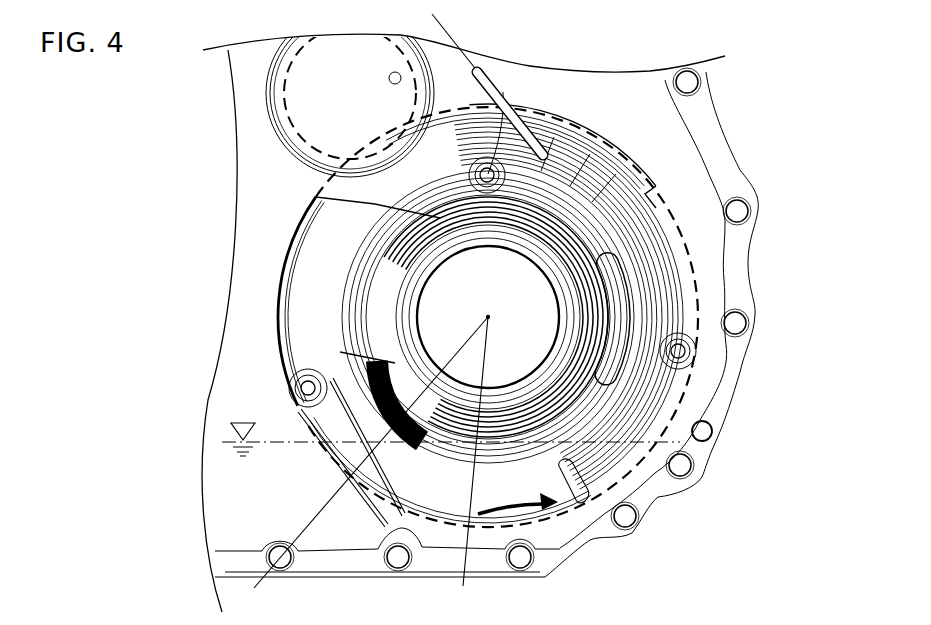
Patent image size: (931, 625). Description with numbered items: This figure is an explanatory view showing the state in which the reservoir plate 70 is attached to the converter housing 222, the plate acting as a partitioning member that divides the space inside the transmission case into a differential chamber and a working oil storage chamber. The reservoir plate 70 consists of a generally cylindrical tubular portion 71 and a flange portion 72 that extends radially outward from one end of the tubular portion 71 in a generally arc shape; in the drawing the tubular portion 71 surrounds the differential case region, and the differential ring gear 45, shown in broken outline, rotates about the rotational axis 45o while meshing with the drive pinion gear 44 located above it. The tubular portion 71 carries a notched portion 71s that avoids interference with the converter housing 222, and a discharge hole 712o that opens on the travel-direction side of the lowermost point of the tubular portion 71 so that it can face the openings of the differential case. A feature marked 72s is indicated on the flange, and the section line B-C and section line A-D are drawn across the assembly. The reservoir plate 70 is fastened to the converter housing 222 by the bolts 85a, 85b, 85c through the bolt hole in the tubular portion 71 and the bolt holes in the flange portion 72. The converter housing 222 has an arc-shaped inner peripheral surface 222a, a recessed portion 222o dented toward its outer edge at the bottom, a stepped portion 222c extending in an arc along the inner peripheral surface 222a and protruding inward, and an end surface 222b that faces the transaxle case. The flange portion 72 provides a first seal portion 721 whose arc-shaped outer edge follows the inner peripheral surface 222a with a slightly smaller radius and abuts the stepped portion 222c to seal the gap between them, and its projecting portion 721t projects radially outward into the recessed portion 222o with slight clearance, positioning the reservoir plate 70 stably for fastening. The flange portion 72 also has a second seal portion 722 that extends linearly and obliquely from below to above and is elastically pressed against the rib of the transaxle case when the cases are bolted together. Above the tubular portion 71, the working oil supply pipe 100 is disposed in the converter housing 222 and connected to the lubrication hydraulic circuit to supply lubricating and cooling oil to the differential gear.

The drive pinion gear 44 is at (275, 113).
The differential ring gear 45 is at (315, 175).
The rotational axis 45o is at (488, 317).
The reservoir plate 70 is at (283, 226).
The tubular portion 71 is at (363, 362).
The notched portion 71s is at (350, 288).
The flange portion 72 is at (325, 253).
The housing rim 72s is at (680, 210).
The bolt 85a is at (488, 317).
The bolt 85b is at (680, 351).
The bolt 85c is at (310, 389).
The working oil supply pipe 100 is at (498, 90).
The discharge hole 712o is at (630, 300).
The first seal portion 721 is at (621, 482).
The projecting portion 721t is at (478, 537).
The second seal portion 722 is at (310, 448).
The converter housing 222 is at (766, 193).
The inner peripheral surface 222a is at (702, 428).
The end surface 222b is at (657, 476).
The stepped portion 222c is at (582, 520).
The recessed portion 222o is at (433, 550).
The axis A is at (497, 321).
The line B is at (364, 461).
The line C is at (471, 462).
The line D is at (449, 36).